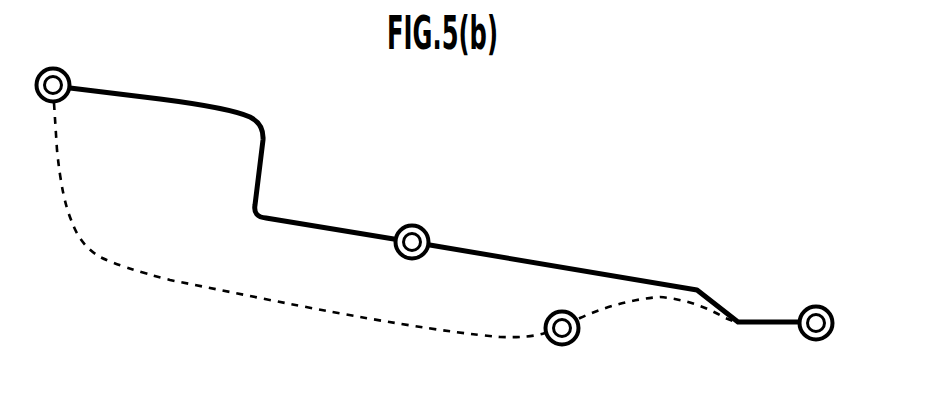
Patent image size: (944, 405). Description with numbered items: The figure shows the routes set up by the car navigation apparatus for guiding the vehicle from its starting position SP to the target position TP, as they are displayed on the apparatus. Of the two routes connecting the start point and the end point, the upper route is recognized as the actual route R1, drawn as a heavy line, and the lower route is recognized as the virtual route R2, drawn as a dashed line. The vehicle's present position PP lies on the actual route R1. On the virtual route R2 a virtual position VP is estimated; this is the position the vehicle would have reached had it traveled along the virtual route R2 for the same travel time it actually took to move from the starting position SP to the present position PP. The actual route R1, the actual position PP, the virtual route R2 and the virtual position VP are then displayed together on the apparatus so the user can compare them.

The target position TP is at (65, 101).
The present position PP is at (416, 257).
The virtual position VP is at (576, 346).
The starting position SP is at (822, 339).
The actual route R1 is at (228, 106).
The virtual route R2 is at (95, 260).